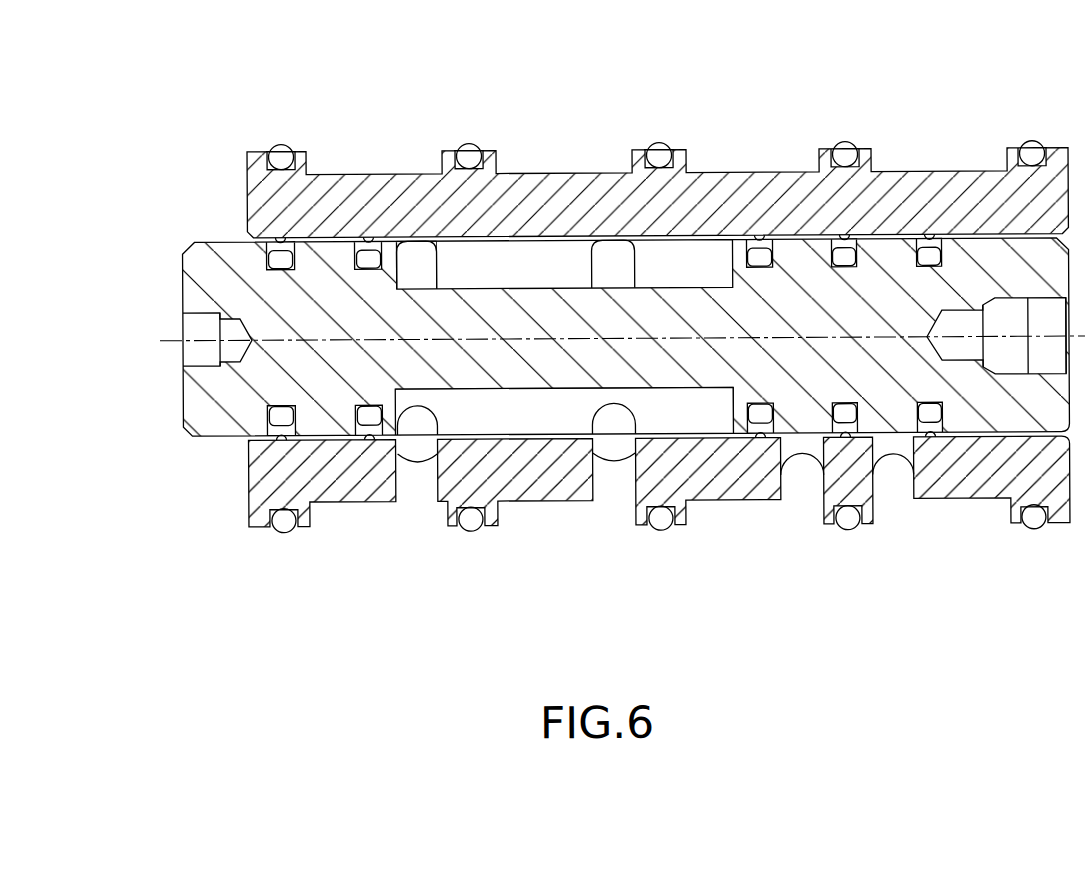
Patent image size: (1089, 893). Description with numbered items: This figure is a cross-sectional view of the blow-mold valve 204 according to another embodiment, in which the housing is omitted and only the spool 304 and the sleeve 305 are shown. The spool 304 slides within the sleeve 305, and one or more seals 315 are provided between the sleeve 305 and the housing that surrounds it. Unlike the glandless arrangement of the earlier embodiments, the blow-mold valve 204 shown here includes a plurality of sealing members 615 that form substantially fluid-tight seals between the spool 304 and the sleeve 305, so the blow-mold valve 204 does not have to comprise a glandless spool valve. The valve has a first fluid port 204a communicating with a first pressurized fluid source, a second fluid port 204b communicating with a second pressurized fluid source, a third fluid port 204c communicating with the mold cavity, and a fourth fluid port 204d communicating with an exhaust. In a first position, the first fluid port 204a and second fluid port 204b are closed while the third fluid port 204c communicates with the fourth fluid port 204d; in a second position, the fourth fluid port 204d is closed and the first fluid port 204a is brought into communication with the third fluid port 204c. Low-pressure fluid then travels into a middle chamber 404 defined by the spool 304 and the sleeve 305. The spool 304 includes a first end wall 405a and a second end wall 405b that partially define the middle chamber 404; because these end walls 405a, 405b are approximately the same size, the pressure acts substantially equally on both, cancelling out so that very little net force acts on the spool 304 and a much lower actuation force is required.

The blow-mold valve 204 is at (178, 567).
The first fluid port 204a is at (800, 487).
The second fluid port 204b is at (893, 487).
The third fluid port 204c is at (611, 487).
The fourth fluid port 204d is at (413, 487).
The spool 304 is at (195, 412).
The sleeve 305 is at (340, 179).
The seals 315 is at (282, 144).
The middle chamber 404 is at (565, 275).
The first end wall 405a is at (733, 396).
The second end wall 405b is at (400, 261).
The sealing members 615 is at (368, 421).